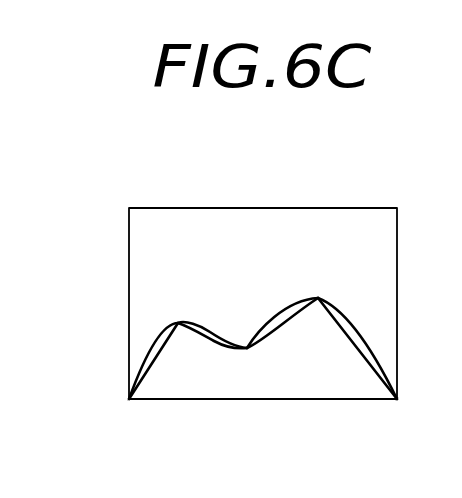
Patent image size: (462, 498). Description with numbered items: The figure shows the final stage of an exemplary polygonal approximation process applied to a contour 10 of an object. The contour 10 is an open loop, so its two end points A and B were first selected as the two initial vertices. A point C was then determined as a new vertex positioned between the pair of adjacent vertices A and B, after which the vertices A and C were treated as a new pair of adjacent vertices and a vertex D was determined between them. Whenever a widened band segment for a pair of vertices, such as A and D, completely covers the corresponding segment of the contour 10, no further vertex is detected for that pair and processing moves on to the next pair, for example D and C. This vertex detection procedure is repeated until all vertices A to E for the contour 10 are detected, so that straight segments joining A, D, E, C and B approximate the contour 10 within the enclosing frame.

The contour 10 is at (157, 341).
The initial vertex A is at (113, 397).
The initial vertex B is at (413, 398).
The new vertex C is at (318, 298).
The new vertex D is at (178, 323).
The vertex E is at (247, 348).